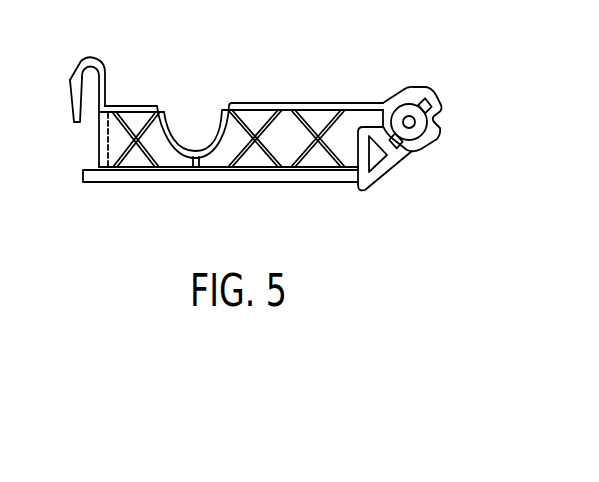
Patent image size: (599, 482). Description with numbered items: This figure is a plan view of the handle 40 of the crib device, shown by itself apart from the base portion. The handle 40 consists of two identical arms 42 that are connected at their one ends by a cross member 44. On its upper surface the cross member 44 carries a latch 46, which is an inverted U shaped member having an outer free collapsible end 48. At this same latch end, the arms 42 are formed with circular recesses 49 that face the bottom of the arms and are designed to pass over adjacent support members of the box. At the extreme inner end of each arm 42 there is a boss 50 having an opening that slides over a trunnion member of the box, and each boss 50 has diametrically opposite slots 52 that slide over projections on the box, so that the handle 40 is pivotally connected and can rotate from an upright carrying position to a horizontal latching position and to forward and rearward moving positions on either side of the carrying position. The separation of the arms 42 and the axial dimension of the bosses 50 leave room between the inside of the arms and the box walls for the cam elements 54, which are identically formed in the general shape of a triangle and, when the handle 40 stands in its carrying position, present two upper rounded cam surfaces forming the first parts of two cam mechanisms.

The handle 40 is at (144, 103).
The arms 42 is at (215, 177).
The cross member 44 is at (98, 143).
The latch 46 is at (98, 57).
The outer free collapsible end 48 is at (79, 106).
The circular recesses 49 is at (192, 137).
The bosses 50 is at (438, 138).
The slots 52 is at (427, 101).
The cam elements 54 is at (395, 167).